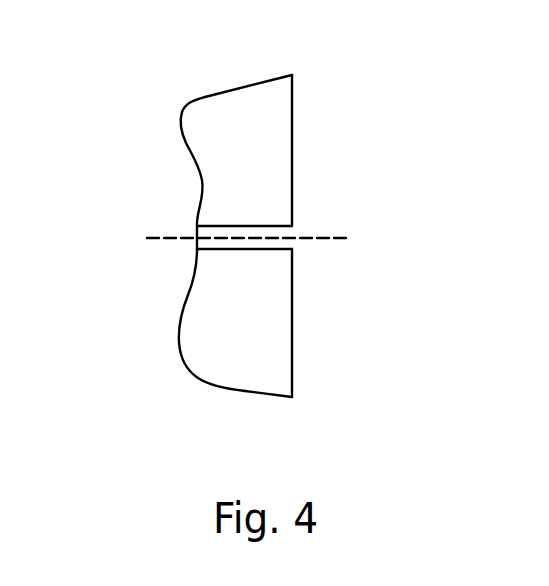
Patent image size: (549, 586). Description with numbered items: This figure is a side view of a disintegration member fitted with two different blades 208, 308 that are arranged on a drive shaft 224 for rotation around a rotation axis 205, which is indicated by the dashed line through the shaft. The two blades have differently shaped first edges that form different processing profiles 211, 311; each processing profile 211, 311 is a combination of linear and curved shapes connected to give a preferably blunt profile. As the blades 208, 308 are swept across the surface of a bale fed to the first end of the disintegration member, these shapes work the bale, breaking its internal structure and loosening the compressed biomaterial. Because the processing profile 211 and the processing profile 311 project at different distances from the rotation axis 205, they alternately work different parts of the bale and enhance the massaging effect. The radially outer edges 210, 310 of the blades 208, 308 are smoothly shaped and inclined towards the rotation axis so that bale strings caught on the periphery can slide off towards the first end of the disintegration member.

The rotation axis 205 is at (308, 238).
The blade 208 is at (248, 167).
The radially outer edge 210 is at (230, 92).
The processing profile 211 is at (193, 160).
The drive shaft 224 is at (257, 226).
The blade 308 is at (245, 302).
The radially outer edge 310 is at (243, 392).
The processing profile 311 is at (187, 292).